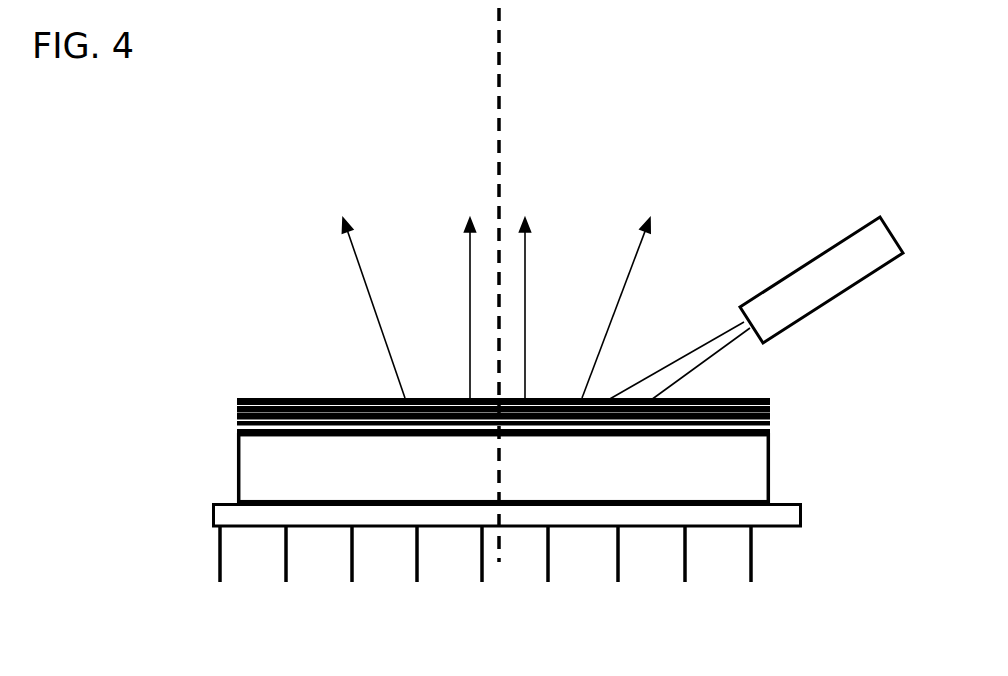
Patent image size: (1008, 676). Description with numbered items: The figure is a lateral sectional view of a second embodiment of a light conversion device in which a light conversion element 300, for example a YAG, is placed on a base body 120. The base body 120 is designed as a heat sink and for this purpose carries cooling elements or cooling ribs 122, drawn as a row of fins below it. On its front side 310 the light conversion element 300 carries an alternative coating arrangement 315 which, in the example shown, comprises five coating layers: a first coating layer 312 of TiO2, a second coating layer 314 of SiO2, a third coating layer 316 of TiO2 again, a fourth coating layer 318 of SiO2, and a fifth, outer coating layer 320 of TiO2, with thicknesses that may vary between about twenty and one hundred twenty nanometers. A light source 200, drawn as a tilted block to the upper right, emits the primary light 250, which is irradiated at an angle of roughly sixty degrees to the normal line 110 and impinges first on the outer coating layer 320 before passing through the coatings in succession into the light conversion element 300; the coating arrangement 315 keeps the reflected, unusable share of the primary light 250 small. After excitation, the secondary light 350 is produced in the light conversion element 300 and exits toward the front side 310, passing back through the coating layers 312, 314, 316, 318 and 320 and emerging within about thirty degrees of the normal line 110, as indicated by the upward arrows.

The normal line 110 is at (502, 78).
The base body 120 is at (802, 510).
The cooling ribs 122 is at (753, 555).
The light source 200 is at (817, 257).
The primary light 250 is at (705, 347).
The light conversion element 300 is at (502, 416).
The front side 310 is at (237, 435).
The first coating layer 312 is at (237, 432).
The second coating layer 314 is at (237, 425).
The coating arrangement 315 is at (497, 396).
The third coating layer 316 is at (770, 418).
The fourth coating layer 318 is at (770, 408).
The fifth coating layer 320 is at (770, 398).
The secondary light 350 is at (467, 256).